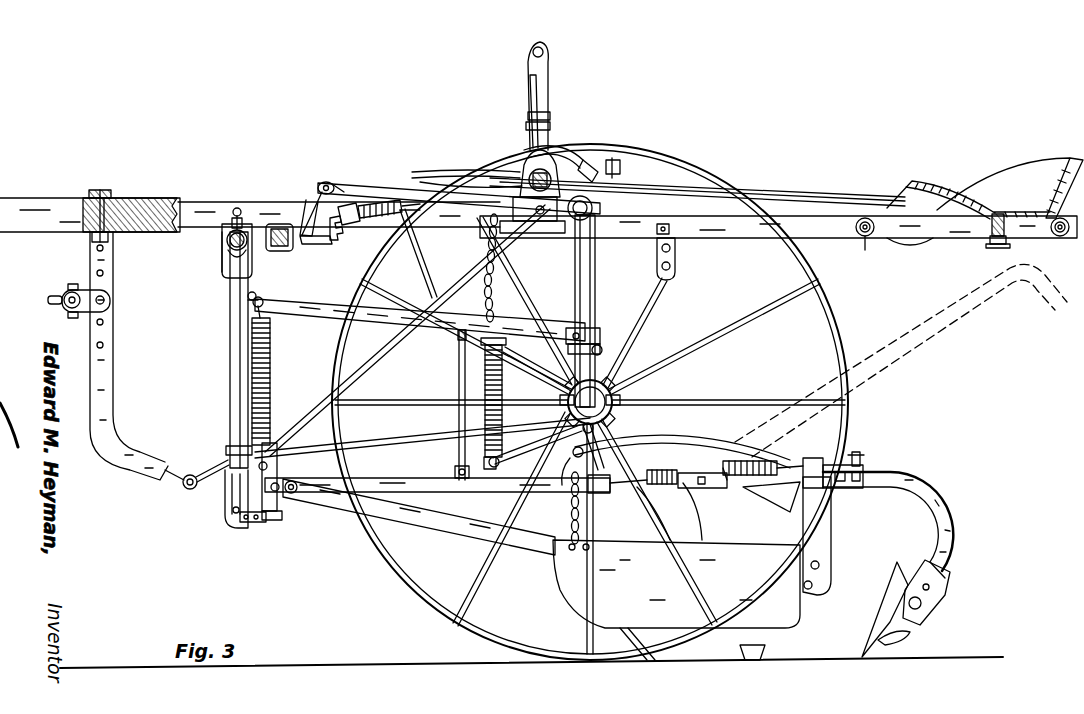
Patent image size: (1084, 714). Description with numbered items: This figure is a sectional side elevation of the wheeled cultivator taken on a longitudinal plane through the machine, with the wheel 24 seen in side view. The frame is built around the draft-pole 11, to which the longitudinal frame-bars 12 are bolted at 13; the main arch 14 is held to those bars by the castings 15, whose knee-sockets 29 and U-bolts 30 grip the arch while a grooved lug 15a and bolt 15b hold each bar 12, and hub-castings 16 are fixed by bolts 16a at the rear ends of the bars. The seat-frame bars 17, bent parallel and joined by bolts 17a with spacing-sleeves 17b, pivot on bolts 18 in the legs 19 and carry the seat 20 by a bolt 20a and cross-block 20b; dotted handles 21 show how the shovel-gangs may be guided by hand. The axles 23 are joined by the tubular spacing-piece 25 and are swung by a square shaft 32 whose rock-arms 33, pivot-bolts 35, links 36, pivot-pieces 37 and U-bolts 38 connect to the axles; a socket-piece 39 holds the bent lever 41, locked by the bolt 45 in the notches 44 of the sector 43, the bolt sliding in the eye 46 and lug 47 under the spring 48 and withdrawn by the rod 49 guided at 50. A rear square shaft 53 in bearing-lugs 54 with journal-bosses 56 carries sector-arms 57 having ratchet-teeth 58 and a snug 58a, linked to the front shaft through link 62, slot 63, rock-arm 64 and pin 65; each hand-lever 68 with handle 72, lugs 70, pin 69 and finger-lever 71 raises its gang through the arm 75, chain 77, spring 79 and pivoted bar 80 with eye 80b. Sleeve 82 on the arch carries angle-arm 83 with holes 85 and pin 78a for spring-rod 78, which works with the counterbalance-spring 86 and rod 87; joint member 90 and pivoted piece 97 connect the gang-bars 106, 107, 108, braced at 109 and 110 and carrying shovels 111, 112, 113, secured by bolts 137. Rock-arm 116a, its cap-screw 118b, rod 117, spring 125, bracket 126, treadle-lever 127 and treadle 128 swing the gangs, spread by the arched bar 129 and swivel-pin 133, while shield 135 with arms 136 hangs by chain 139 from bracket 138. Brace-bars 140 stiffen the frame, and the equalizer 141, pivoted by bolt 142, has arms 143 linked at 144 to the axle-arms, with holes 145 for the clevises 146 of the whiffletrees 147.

The draft-pole 11 is at (90, 215).
The longitudinal frame-bars 12 is at (262, 202).
The bolted connection of frame-bars to pole 13 is at (92, 204).
The main arch 14 is at (231, 318).
The castings 15 is at (220, 255).
The grooved lug 15a is at (236, 206).
The bolt 15b is at (244, 216).
The hub-castings 16 is at (616, 162).
The bolts 16a is at (550, 233).
The seat-frame bars 17 is at (765, 238).
The bolts 17a is at (1060, 236).
The spacing-sleeves 17b is at (860, 236).
The pivot-bolts 18 is at (666, 226).
The legs 19 is at (676, 262).
The seat 20 is at (985, 201).
The bolt 20a is at (990, 232).
The cross-block 20b is at (995, 246).
The handles 21 is at (920, 338).
The axles 23 is at (596, 258).
The wheel 24 is at (425, 610).
The tubular spacing-piece 25 is at (592, 200).
The knee-sockets 29 is at (226, 240).
The U-bolts 30 is at (224, 262).
The square shaft 32 is at (420, 310).
The rock-arms 33 is at (262, 297).
The pivot-bolt 35 is at (238, 336).
The link 36 is at (385, 315).
The pivot-piece 37 is at (596, 332).
The U-bolt 38 is at (602, 350).
The socket-piece 39 is at (291, 238).
The bent lever 41 is at (824, 190).
The sector 43 is at (330, 236).
The notches 44 is at (308, 198).
The bolt 45 is at (338, 230).
The eye 46 is at (348, 204).
The perforated lug 47 is at (412, 226).
The coiled compression-spring 48 is at (366, 220).
The rod 49 is at (762, 180).
The perforated guide 50 is at (614, 165).
The transverse square shaft 53 is at (527, 176).
The bearing-lugs 54 is at (530, 176).
The journal-boss 56 is at (520, 182).
The sector-shaped rock-arm 57 is at (530, 170).
The ratchet-teeth 58 is at (550, 146).
The snug 58a is at (592, 166).
The link 62 is at (450, 212).
The slot 63 is at (324, 182).
The rock-arm 64 is at (318, 184).
The pin 65 is at (334, 184).
The hand-lever 68 is at (531, 95).
The pin 69 is at (526, 125).
The pivot-lugs 70 is at (528, 115).
The finger-lever 71 is at (546, 80).
The handle 72 is at (544, 54).
The forwardly-projecting arm 75 is at (486, 221).
The chain 77 is at (489, 262).
The spring-rod 78 is at (272, 462).
The pin connection 78a is at (272, 520).
The spring 79 is at (505, 397).
The horizontally-projecting arm 80 is at (555, 488).
The eye 80b is at (500, 462).
The sleeve 82 is at (228, 448).
The angle-arm 83 is at (226, 493).
The holes 85 is at (248, 522).
The coiled counterbalance-spring 86 is at (274, 389).
The rod 87 is at (250, 293).
The pivot-joint member 90 is at (232, 512).
The pivoted piece 97 is at (270, 466).
The longitudinal frame-bar 106 is at (912, 478).
The longitudinal frame-bar 107 is at (712, 528).
The longitudinal frame-bar 108 is at (770, 497).
The brace 109 is at (838, 488).
The brace 110 is at (696, 520).
The shovel 111 is at (880, 618).
The shovel 112 is at (625, 636).
The shovel 113 is at (742, 655).
The upwardly-extending rock-arm 116a is at (605, 445).
The rod 117 is at (412, 444).
The cap-screw 118b is at (615, 398).
The retractile coiled spring 125 is at (716, 469).
The bracket 126 is at (862, 460).
The treadle-lever 127 is at (705, 440).
The treadle 128 is at (806, 520).
The arched bar 129 is at (460, 378).
The swivel-pin 133 is at (455, 472).
The shield 135 is at (676, 584).
The arms 136 is at (440, 517).
The bolts 137 is at (285, 495).
The overhung bracket 138 is at (572, 452).
The chain 139 is at (572, 520).
The brace-bars 140 is at (484, 296).
The arched equalizer 141 is at (100, 190).
The bolt 142 is at (108, 192).
The depending arms 143 is at (114, 392).
The links 144 is at (183, 478).
The holes 145 is at (104, 250).
The clevises 146 is at (92, 305).
The whiffletrees 147 is at (66, 296).